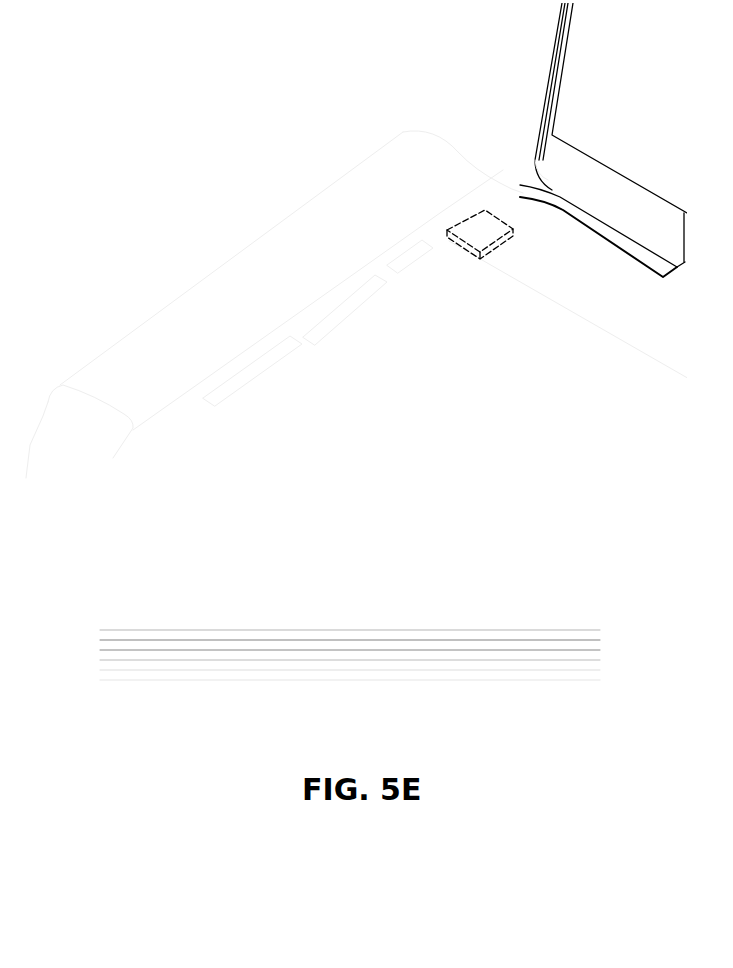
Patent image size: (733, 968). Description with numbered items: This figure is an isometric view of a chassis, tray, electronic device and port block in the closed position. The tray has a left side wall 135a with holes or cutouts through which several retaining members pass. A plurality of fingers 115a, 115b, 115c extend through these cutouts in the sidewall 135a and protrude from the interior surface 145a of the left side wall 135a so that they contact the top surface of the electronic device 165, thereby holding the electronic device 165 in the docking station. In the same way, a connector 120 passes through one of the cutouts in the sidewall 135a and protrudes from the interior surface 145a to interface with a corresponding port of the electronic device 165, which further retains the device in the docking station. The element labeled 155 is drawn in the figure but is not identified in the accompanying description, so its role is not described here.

The hinge cover 155 is at (372, 163).
The connector 120 is at (480, 225).
The sidewall 135a is at (477, 170).
The finger 115a is at (265, 355).
The finger 115b is at (340, 307).
The finger 115c is at (412, 252).
The interior surface 145a is at (162, 423).
The electronic device 165 is at (591, 329).